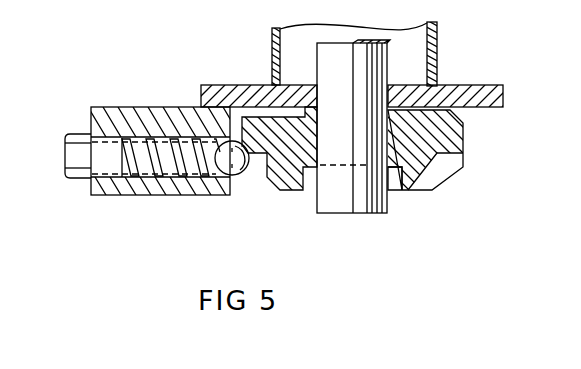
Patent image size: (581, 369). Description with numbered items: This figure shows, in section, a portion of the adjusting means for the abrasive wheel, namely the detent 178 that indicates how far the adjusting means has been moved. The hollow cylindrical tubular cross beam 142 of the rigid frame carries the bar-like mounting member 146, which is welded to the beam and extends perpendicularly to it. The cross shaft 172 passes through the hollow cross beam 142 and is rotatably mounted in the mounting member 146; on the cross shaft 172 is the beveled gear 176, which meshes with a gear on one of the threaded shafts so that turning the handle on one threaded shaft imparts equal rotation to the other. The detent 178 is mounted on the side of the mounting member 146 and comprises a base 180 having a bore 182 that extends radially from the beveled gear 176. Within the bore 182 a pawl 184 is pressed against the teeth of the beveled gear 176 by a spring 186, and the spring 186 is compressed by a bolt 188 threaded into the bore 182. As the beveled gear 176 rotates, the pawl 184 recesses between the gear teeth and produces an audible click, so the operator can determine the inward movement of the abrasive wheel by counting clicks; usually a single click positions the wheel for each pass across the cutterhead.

The cross beam 142 is at (440, 56).
The mounting member 146 is at (516, 68).
The cross shaft 172 is at (368, 214).
The beveled gear 176 is at (442, 178).
The detent 178 is at (76, 98).
The base 180 is at (136, 72).
The bore 182 is at (163, 137).
The pawl 184 is at (247, 178).
The spring 186 is at (180, 163).
The bolt 188 is at (78, 178).